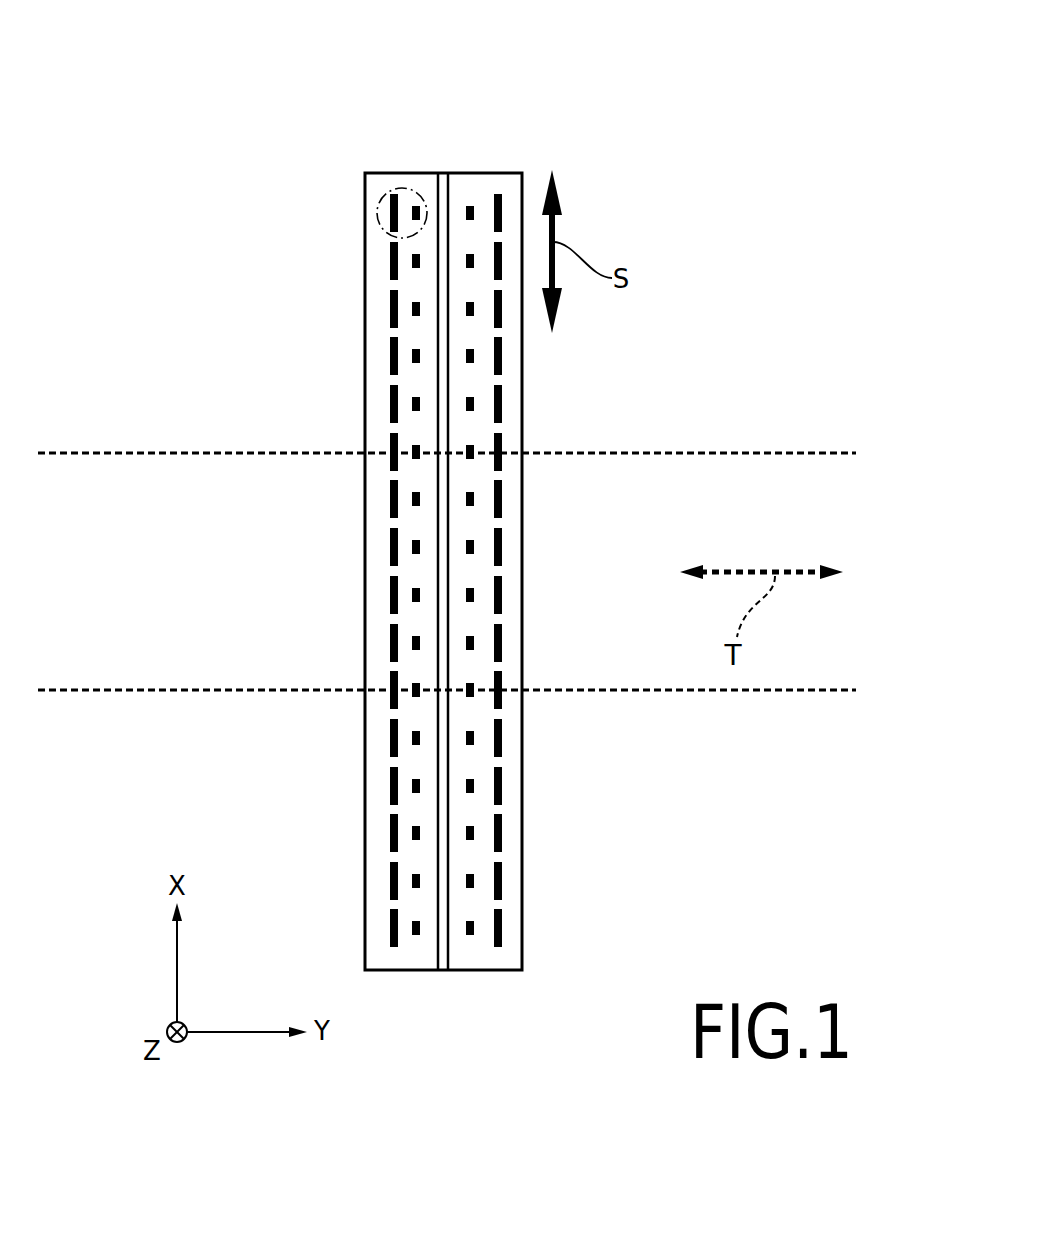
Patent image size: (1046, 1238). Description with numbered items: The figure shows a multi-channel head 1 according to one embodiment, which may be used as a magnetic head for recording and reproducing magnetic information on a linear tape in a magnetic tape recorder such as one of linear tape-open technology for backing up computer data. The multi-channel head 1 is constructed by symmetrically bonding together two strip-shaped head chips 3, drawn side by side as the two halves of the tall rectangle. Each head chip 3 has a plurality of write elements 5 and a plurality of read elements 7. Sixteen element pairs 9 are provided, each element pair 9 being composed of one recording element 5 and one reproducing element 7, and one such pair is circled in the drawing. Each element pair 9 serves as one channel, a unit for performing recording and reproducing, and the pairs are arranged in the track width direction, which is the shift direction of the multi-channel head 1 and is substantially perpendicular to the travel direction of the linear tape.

The multi-channel head 1 is at (268, 38).
The head chip 3 is at (412, 970).
The write element 5 is at (388, 216).
The read element 7 is at (417, 208).
The element pair 9 is at (382, 201).